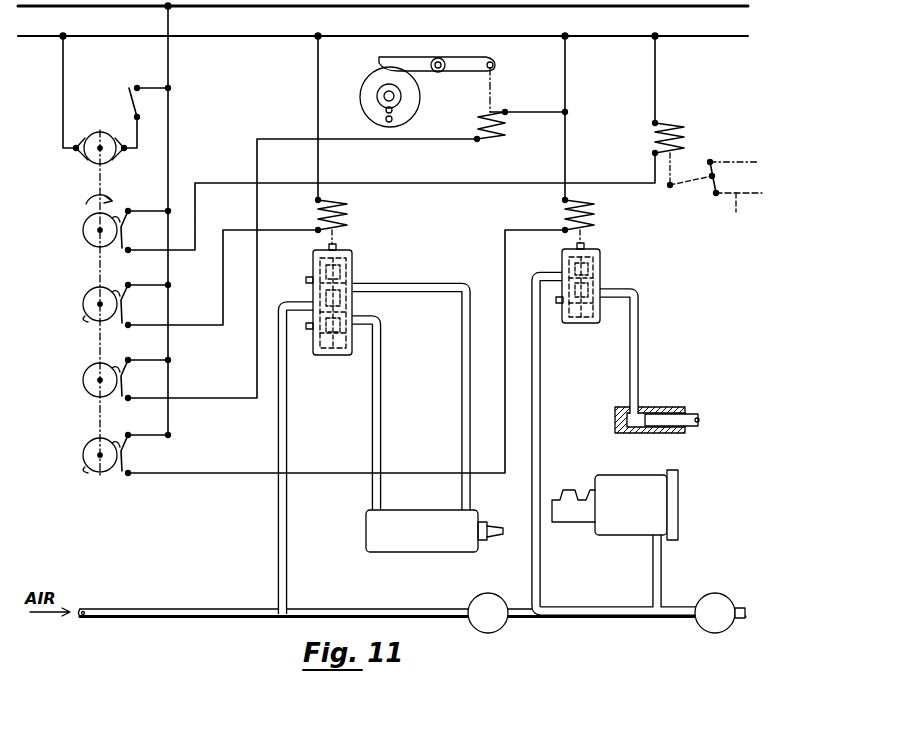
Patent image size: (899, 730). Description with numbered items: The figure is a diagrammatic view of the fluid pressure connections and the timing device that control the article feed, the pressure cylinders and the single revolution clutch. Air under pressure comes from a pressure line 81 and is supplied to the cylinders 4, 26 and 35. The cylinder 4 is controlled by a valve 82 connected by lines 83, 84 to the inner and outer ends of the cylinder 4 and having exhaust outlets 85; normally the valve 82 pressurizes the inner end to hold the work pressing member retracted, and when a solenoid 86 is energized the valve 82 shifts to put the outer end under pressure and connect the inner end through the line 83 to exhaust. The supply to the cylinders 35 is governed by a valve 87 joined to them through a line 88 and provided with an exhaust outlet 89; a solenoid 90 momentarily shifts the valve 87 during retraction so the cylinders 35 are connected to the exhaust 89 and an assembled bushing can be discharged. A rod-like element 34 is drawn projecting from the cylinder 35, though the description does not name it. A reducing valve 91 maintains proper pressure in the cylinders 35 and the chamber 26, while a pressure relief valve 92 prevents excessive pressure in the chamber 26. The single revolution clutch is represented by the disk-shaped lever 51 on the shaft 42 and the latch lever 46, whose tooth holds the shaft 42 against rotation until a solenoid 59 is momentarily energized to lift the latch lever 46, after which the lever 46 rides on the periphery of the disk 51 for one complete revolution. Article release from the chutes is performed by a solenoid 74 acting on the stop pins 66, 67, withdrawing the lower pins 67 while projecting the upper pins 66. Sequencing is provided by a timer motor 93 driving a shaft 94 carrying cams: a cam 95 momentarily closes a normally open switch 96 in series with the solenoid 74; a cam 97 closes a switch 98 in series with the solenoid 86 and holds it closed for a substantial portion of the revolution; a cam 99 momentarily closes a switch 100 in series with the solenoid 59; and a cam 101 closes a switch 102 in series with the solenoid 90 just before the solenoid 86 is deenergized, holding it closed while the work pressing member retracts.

The cylinder 4 is at (408, 553).
The cylinder 26 is at (655, 498).
The piston rod 34 is at (699, 412).
The cylinder 35 is at (682, 401).
The shaft 42 is at (396, 96).
The latch lever 46 is at (470, 45).
The disk-shaped lever 51 is at (395, 94).
The solenoid 59 is at (502, 135).
The stop pin 66 is at (732, 160).
The stop pin 67 is at (736, 200).
The solenoid 74 is at (680, 130).
The pressure line 81 is at (200, 608).
The valve 82 is at (352, 266).
The line 83 is at (462, 378).
The line 84 is at (381, 428).
The exhaust outlet 85 is at (305, 280).
The solenoid 86 is at (350, 213).
The valve 87 is at (601, 266).
The line 88 is at (640, 327).
The exhaust outlet 89 is at (557, 305).
The solenoid 90 is at (598, 218).
The reducing valve 91 is at (502, 631).
The pressure relief valve 92 is at (707, 632).
The timer motor 93 is at (100, 131).
The shaft 94 is at (95, 183).
The cam 95 is at (83, 235).
The switch 96 is at (128, 245).
The cam 97 is at (84, 319).
The switch 98 is at (127, 318).
The cam 99 is at (83, 387).
The switch 100 is at (125, 394).
The cam 101 is at (84, 469).
The switch 102 is at (132, 466).